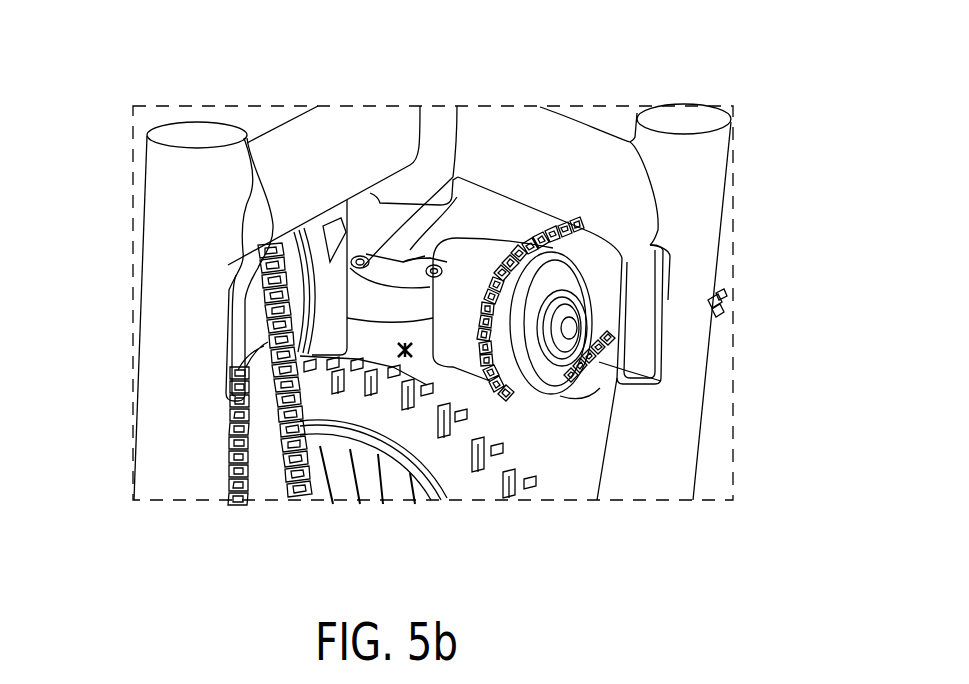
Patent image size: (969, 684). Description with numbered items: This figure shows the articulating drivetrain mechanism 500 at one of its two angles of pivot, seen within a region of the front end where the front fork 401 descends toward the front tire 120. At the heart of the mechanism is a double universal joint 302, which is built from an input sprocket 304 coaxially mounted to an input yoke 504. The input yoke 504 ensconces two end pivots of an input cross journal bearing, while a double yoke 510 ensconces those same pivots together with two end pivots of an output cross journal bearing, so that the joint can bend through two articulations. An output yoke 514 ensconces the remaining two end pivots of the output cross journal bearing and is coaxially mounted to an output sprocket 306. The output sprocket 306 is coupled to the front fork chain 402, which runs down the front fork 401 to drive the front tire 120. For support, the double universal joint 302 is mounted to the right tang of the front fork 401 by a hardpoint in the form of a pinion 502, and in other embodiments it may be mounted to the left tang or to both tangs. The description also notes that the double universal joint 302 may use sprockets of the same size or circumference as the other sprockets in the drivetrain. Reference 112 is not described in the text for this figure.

The drive sprocket hub 112 is at (597, 360).
The front tire 120 is at (463, 450).
The double universal joint 302 is at (358, 257).
The input sprocket 304 is at (233, 120).
The output sprocket 306 is at (580, 272).
The front fork 401 is at (690, 320).
The front fork chain 402 is at (232, 420).
The articulating drivetrain mechanism 500 is at (413, 353).
The pinion 502 is at (230, 330).
The input yoke 504 is at (405, 257).
The double yoke 510 is at (463, 207).
The output yoke 514 is at (513, 187).